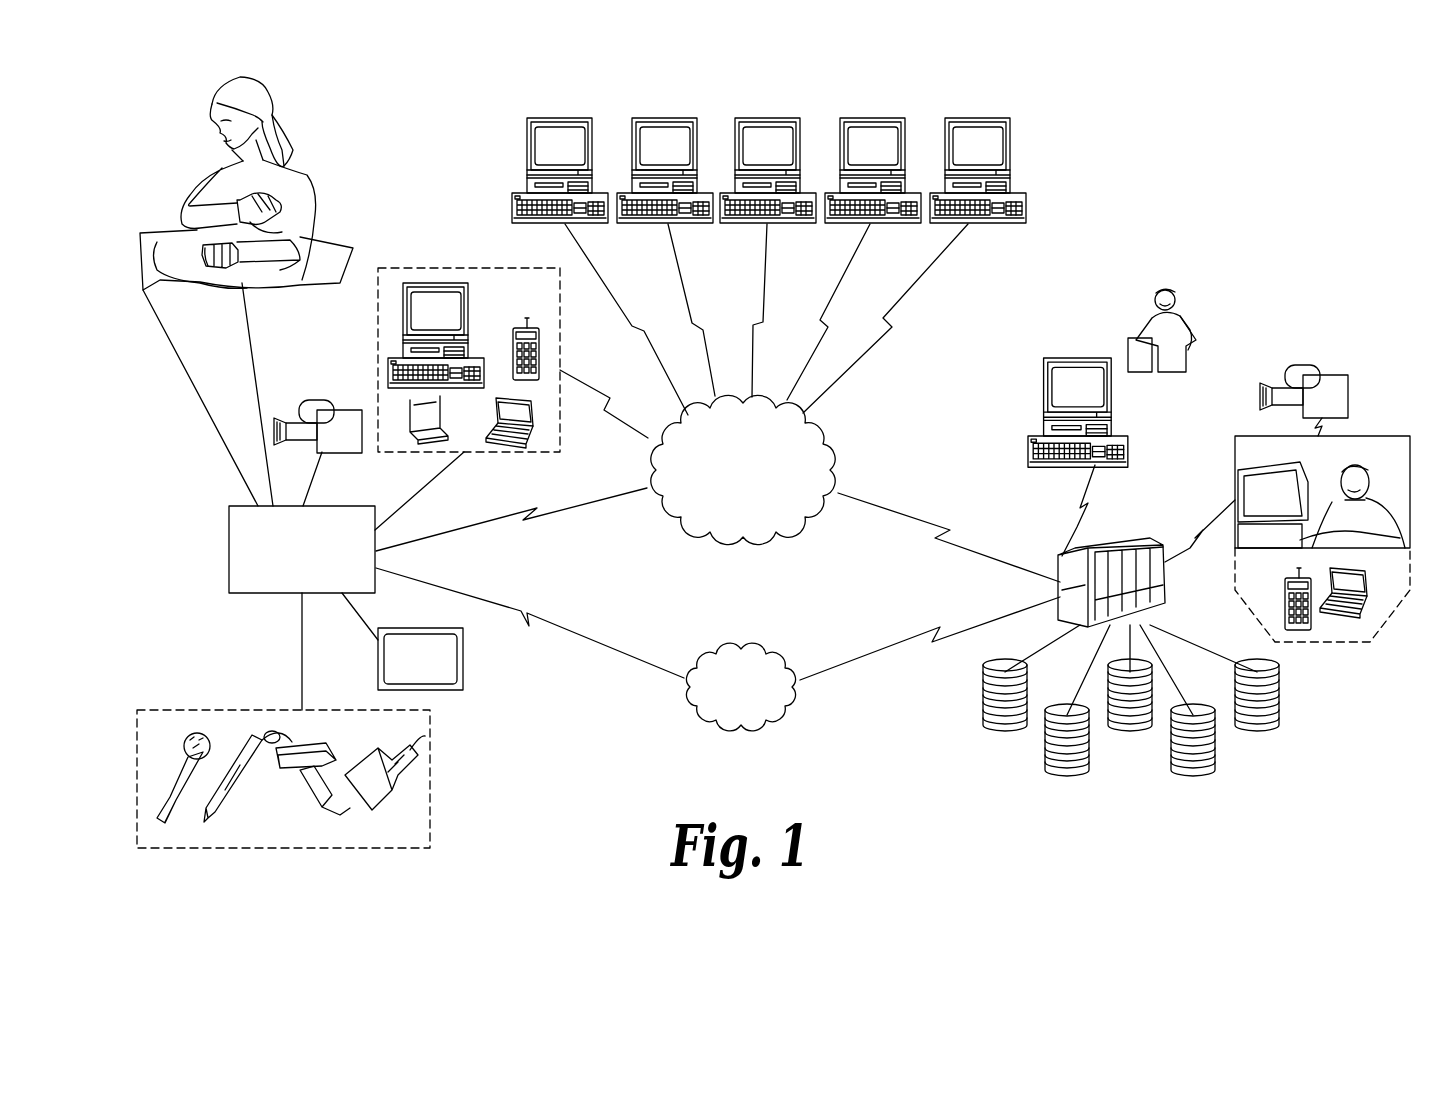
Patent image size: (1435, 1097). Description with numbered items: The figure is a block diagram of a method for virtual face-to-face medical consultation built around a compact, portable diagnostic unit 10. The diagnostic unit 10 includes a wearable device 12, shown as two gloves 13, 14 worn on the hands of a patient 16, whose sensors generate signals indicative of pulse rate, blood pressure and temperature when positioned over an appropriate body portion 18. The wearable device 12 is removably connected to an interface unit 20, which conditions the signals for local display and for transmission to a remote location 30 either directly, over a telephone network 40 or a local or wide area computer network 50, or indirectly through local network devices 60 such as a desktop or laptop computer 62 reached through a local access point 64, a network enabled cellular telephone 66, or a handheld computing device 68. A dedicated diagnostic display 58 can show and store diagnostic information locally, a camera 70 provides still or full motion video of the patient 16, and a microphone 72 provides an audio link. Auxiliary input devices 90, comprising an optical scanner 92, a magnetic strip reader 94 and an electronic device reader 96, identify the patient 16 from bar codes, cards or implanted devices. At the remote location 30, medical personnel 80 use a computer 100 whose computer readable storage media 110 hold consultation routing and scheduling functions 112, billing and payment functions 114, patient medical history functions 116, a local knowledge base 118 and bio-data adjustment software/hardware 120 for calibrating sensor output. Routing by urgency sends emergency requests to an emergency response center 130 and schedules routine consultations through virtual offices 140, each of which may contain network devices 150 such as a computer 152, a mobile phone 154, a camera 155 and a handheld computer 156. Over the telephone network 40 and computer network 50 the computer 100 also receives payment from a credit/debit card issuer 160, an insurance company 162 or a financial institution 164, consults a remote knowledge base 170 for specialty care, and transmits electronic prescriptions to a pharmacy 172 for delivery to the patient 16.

The diagnostic unit 10 is at (442, 868).
The wearable device 12 is at (244, 190).
The glove 13 is at (258, 242).
The glove 14 is at (215, 270).
The patient 16 is at (304, 134).
The body portion 18 is at (293, 203).
The interface unit 20 is at (262, 596).
The remote location 30 is at (1195, 238).
The telephone network 40 is at (741, 687).
The computer network 50 is at (743, 469).
The dedicated diagnostic display 58 is at (465, 670).
The local network devices 60 is at (525, 455).
The computer 62 is at (440, 288).
The local access point 64 is at (428, 448).
The cellular telephone 66 is at (518, 332).
The handheld computing device 68 is at (535, 425).
The camera 70 is at (340, 453).
The microphone 72 is at (182, 790).
The medical personnel 80 is at (1380, 478).
The auxiliary input devices 90 is at (432, 752).
The optical scanner 92 is at (236, 790).
The magnetic strip reader 94 is at (295, 780).
The electronic device reader 96 is at (380, 795).
The computer 100 is at (1120, 548).
The computer readable storage media 110 is at (955, 715).
The consultation routing and scheduling functions 112 is at (1000, 730).
The billing and payment functions 114 is at (1064, 776).
The patient medical history storage and retrieval functions 116 is at (1128, 730).
The local knowledge base 118 is at (1192, 776).
The bio-data adjustment software/hardware 120 is at (1255, 730).
The emergency response center 130 is at (1105, 328).
The virtual office 140 is at (1290, 338).
The network devices 150 is at (1386, 622).
The computer 152 is at (1240, 462).
The mobile phone 154 is at (1294, 632).
The camera 155 is at (1340, 370).
The handheld computer 156 is at (1350, 618).
The credit/debit card issuer 160 is at (873, 118).
The insurance company 162 is at (978, 118).
The financial institution 164 is at (665, 118).
The remote knowledge base 170 is at (560, 118).
The pharmacy 172 is at (768, 118).